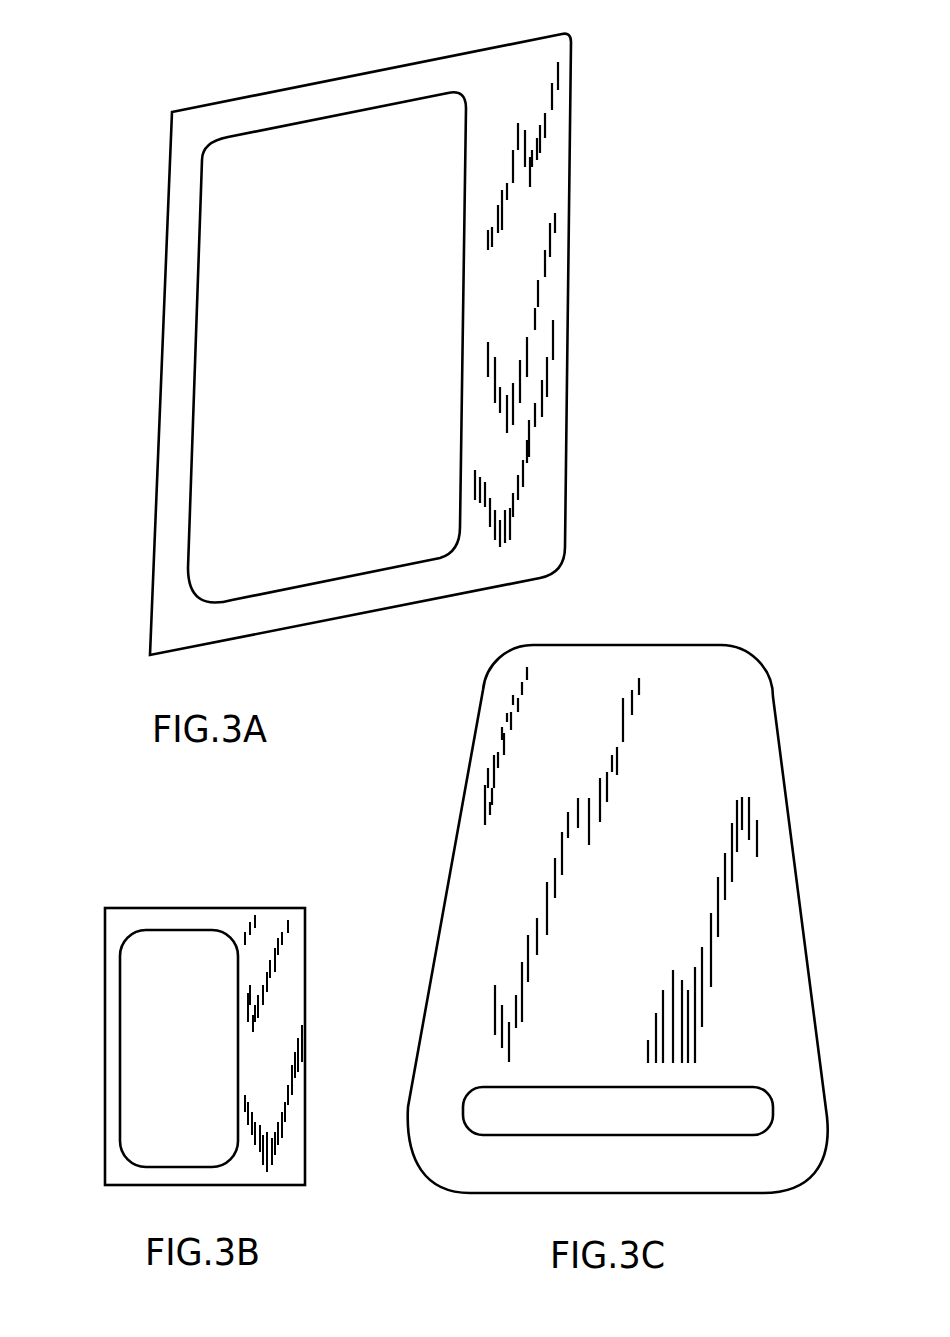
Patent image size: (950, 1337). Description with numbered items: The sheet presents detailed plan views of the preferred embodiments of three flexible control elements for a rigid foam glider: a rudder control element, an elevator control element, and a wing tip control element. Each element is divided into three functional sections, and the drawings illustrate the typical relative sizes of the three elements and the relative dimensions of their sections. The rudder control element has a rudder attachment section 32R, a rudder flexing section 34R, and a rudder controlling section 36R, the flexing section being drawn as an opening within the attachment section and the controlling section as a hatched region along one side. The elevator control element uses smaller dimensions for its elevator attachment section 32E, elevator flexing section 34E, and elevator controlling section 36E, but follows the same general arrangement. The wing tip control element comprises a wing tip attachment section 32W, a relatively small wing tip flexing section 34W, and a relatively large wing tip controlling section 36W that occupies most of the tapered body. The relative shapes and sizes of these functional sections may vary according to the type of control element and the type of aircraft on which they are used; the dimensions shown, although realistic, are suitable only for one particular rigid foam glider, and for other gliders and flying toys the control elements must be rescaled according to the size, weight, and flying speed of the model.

In FIG. 3A, the rudder attachment section 32R is at (162, 370).
In FIG. 3A, the rudder flexing section 34R is at (335, 78).
In FIG. 3A, the rudder controlling section 36R is at (568, 315).
In FIG. 3B, the elevator attachment section 32E is at (105, 1058).
In FIG. 3B, the elevator flexing section 34E is at (177, 907).
In FIG. 3B, the elevator controlling section 36E is at (305, 1020).
In FIG. 3C, the wing tip attachment section 32W is at (740, 1195).
In FIG. 3C, the wing tip flexing section 34W is at (408, 1105).
In FIG. 3C, the wing tip controlling section 36W is at (775, 788).